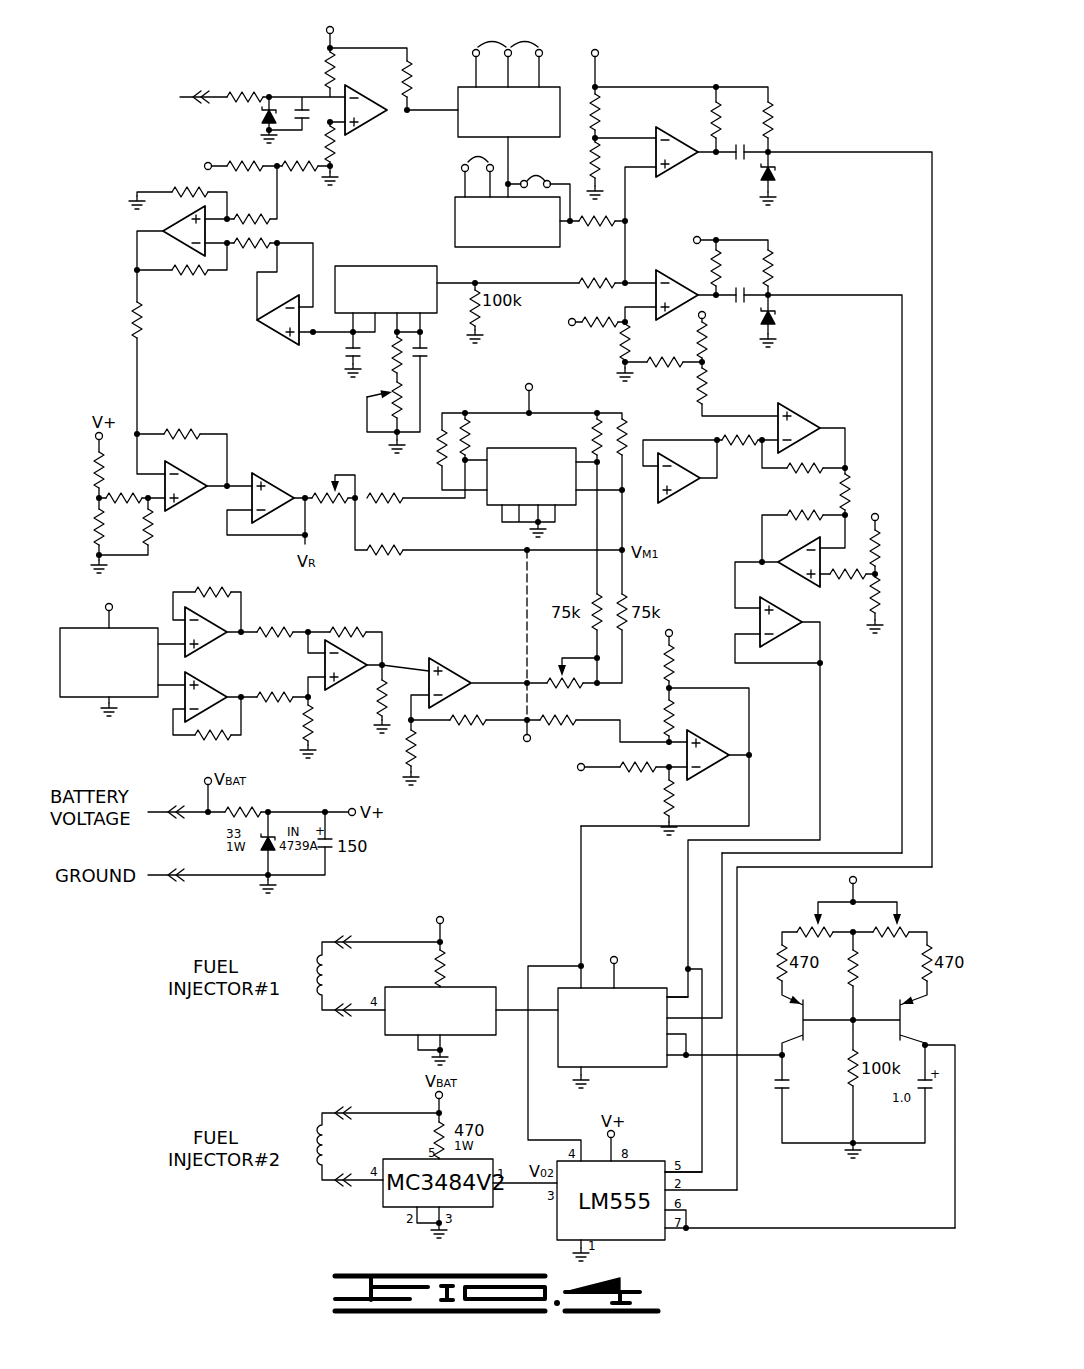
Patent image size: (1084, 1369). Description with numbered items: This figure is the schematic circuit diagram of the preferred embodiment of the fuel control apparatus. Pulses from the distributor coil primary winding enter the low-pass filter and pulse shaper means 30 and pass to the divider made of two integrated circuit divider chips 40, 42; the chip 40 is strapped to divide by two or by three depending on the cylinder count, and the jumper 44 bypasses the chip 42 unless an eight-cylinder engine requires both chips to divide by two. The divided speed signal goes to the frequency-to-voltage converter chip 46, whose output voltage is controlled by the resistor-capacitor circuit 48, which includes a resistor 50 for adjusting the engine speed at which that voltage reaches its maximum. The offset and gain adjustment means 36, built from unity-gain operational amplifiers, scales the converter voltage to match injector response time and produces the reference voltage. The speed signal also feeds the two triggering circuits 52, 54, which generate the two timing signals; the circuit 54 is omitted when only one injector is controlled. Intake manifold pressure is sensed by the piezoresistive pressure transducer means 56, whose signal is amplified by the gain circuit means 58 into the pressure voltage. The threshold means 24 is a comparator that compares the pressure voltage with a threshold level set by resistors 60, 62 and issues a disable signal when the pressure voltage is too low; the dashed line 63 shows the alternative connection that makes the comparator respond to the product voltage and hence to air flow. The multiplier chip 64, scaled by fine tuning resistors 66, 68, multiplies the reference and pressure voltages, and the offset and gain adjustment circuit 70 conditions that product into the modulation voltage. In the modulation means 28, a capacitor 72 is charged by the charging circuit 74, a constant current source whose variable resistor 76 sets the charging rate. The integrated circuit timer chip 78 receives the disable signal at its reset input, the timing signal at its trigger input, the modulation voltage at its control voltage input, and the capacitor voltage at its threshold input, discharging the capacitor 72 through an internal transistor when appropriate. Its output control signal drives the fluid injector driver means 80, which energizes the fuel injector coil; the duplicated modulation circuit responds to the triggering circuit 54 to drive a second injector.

The threshold means 24 is at (760, 756).
The modulation means 28 is at (548, 855).
The low-pass filter and pulse shaper means 30 is at (372, 38).
The offset and gain adjustment means 36 is at (114, 226).
The integrated circuit divider chip 40 is at (457, 127).
The integrated circuit divider chip 42 is at (497, 247).
The jumper 44 is at (539, 178).
The integrated circuit chip 46 is at (389, 265).
The resistor-capacitor circuit 48 is at (348, 417).
The resistor 50 is at (398, 393).
The triggering circuit 52 is at (840, 258).
The triggering circuit 54 is at (840, 112).
The pressure transducer means 56 is at (101, 700).
The gain circuit means 58 is at (420, 648).
The resistor 60 is at (677, 796).
The resistor 62 is at (626, 773).
The dashed line 63 is at (521, 583).
The integrated circuit multiplier chip 64 is at (485, 507).
The fine tuning resistor 66 is at (340, 542).
The fine tuning resistor 68 is at (545, 668).
The offset and gain adjustment circuit 70 is at (853, 632).
The capacitor 72 is at (789, 1087).
The charging circuit 74 is at (782, 919).
The variable resistor 76 is at (837, 948).
The integrated circuit timer chip 78 is at (651, 987).
The fluid injector driver means 80 is at (500, 968).